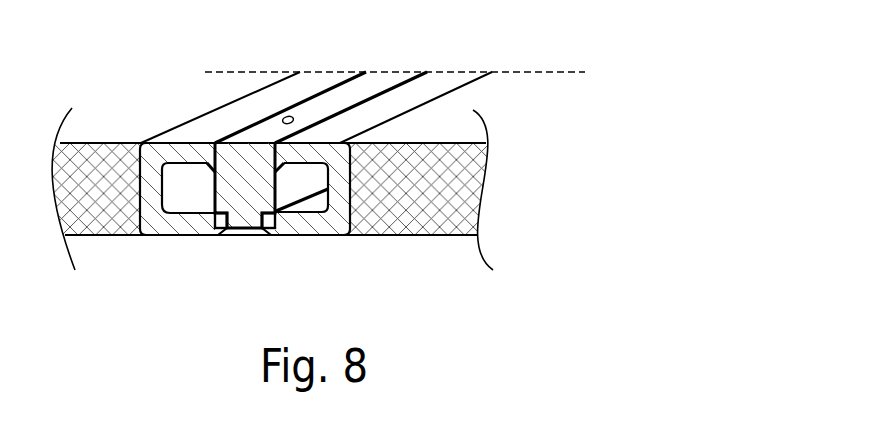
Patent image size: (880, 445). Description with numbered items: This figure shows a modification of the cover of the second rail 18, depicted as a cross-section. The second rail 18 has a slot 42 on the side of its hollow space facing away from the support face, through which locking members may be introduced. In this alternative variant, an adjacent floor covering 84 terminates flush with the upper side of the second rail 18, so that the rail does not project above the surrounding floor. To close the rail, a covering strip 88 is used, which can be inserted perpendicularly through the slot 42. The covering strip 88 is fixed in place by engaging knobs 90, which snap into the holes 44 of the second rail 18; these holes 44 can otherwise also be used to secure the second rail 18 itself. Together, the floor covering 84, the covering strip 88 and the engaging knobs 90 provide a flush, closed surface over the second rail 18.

The second rail 18 is at (313, 153).
The slot 42 is at (247, 128).
The hole 44 is at (268, 218).
The floor covering 84 is at (465, 183).
The covering strip 88 is at (230, 178).
The engaging knobs 90 is at (259, 168).